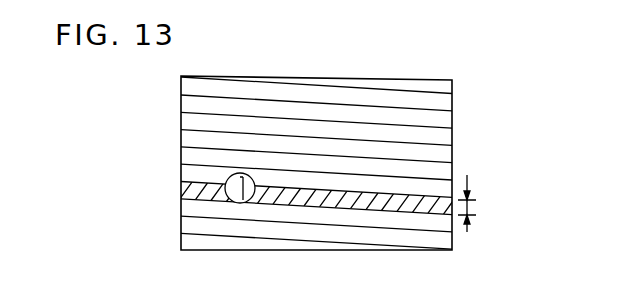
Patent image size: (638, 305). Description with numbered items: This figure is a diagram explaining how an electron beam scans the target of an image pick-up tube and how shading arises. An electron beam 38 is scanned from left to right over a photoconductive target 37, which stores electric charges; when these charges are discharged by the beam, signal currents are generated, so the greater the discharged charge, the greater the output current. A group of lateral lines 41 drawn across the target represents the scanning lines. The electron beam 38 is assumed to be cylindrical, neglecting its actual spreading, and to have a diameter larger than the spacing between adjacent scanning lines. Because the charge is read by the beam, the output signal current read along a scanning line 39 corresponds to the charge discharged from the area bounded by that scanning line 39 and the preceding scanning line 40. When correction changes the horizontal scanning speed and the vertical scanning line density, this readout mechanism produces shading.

The photoconductive target 37 is at (453, 101).
The electron beam 38 is at (228, 183).
The scanning line 39 is at (197, 198).
The preceding scanning line 40 is at (225, 187).
The group of lateral lines 41 is at (490, 97).